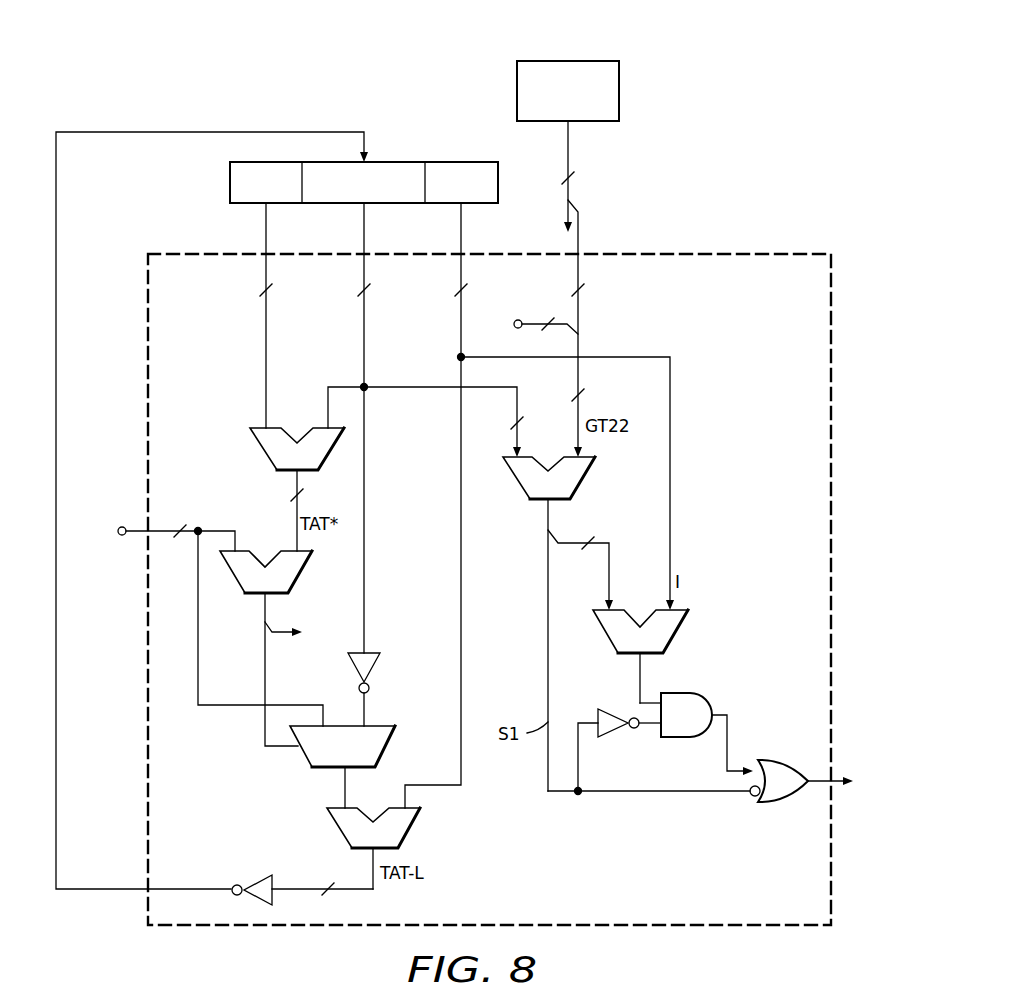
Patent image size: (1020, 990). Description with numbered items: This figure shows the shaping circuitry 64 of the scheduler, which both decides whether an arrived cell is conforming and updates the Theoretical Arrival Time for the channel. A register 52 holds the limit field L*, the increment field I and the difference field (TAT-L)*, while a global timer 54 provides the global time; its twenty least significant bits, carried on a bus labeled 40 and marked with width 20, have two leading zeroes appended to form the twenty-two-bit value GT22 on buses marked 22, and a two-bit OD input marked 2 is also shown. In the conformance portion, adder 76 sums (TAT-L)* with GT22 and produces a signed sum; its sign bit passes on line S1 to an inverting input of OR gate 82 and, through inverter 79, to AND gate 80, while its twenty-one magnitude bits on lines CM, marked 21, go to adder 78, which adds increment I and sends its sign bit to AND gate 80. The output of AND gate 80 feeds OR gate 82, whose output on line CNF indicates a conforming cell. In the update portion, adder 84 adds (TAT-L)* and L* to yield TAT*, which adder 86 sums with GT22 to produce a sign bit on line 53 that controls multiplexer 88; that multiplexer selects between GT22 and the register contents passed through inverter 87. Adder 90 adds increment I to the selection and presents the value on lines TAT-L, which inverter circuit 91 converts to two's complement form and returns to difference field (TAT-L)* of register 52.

The OD bus (2 bits) 2 is at (531, 318).
The GT bus (20 bits) 20 is at (567, 328).
The CM bus (21 bits) 21 is at (595, 565).
The 22-bit bus 22 is at (371, 549).
The global timer bus 40 is at (570, 176).
The register 52 is at (230, 185).
The TAT output line 53 is at (264, 726).
The global timer 54 is at (619, 92).
The shaping circuitry 64 is at (768, 343).
The adder 76 is at (586, 480).
The adder 78 is at (604, 633).
The inverter 79 is at (618, 740).
The AND gate 80 is at (672, 692).
The OR gate 82 is at (780, 806).
The adder 84 is at (262, 450).
The adder 86 is at (302, 573).
The inverter 87 is at (350, 667).
The multiplexer 88 is at (308, 759).
The adder 90 is at (338, 829).
The inverter circuit 91 is at (256, 878).